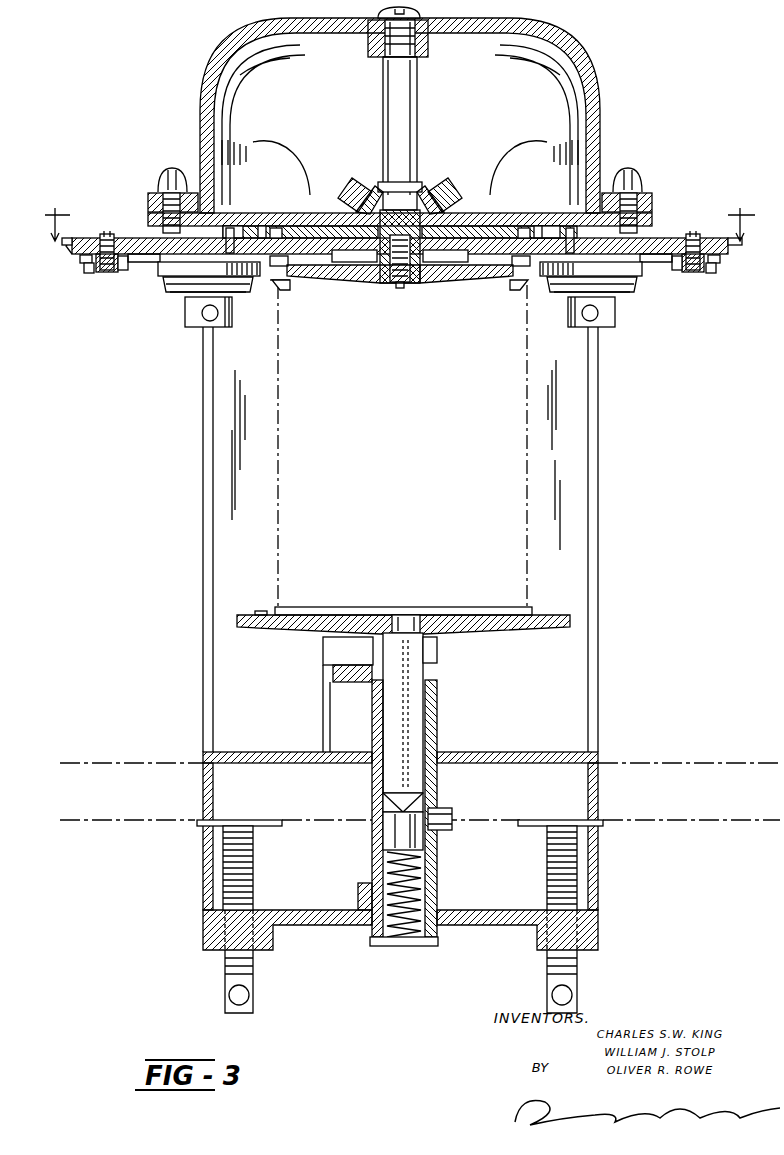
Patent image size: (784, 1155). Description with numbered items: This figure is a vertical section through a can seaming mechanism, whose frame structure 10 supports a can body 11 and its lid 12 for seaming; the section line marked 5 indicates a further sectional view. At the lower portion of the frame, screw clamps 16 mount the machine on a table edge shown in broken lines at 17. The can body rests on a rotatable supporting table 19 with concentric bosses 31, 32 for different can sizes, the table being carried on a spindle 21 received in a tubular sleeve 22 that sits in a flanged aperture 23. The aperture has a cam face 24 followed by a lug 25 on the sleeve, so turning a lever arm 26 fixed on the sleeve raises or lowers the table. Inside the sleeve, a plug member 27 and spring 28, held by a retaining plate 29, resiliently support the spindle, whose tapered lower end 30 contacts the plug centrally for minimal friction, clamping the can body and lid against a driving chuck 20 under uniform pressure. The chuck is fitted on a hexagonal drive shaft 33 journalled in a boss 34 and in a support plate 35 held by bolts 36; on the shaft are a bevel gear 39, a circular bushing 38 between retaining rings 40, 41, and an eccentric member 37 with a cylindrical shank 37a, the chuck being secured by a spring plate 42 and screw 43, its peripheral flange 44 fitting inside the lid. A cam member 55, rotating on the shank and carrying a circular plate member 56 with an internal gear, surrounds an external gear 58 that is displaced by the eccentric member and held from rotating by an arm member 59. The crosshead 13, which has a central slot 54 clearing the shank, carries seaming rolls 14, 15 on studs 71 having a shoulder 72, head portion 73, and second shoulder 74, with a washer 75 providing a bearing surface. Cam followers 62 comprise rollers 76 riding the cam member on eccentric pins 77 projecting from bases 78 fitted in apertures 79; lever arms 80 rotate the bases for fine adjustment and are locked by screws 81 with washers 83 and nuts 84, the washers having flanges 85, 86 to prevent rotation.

The section line 5 is at (398, 231).
The frame structure 10 is at (203, 462).
The can body 11 is at (278, 430).
The lid 12 is at (275, 285).
The crosshead 13 is at (138, 262).
The seaming roll 14 is at (170, 290).
The seaming roll 15 is at (632, 290).
The screw clamps 16 is at (253, 865).
The table edge 17 is at (112, 760).
The supporting table 19 is at (358, 615).
The driving chuck 20 is at (312, 283).
The spindle 21 is at (423, 650).
The tubular sleeve 22 is at (437, 722).
The flanged aperture 23 is at (437, 870).
The cam face 24 is at (360, 884).
The lug 25 is at (446, 810).
The lever arm 26 is at (356, 665).
The plug member 27 is at (383, 830).
The spring 28 is at (404, 946).
The retaining plate 29 is at (380, 946).
The tapered end 30 is at (383, 801).
The concentric boss 31 is at (258, 611).
The concentric boss 32 is at (278, 607).
The drive shaft 33 is at (383, 108).
The boss 34 is at (428, 48).
The support plate 35 is at (280, 198).
The bolts 36 is at (172, 168).
The eccentric member 37 is at (380, 216).
The cylindrical shank 37a is at (422, 283).
The circular bushing 38 is at (352, 192).
The bevel gear 39 is at (372, 188).
The retaining ring 40 is at (425, 188).
The retaining ring 41 is at (450, 192).
The spring plate 42 is at (385, 284).
The screw 43 is at (400, 288).
The peripheral flange 44 is at (284, 291).
The central slot 54 is at (516, 291).
The cam member 55 is at (548, 228).
The circular plate member 56 is at (280, 228).
The external gear 58 is at (468, 228).
The arm member 59 is at (233, 228).
The cam followers 62 is at (262, 228).
The studs 71 is at (152, 241).
The shoulder 72 is at (205, 290).
The head portion 73 is at (215, 328).
The shoulder 74 is at (194, 327).
The washer 75 is at (160, 272).
The roller 76 is at (230, 228).
The pin 77 is at (400, 236).
The base 78 is at (276, 260).
The aperture 79 is at (400, 258).
The lever arm 80 is at (95, 238).
The screws 81 is at (106, 232).
The washers 83 is at (84, 268).
The nuts 84 is at (104, 272).
The flange 85 is at (80, 260).
The flange 86 is at (120, 270).